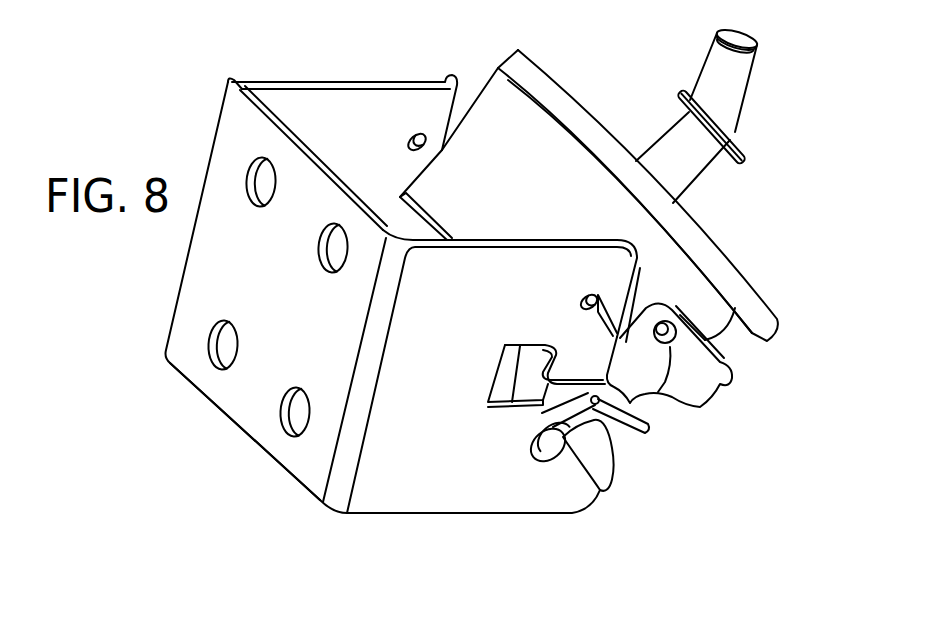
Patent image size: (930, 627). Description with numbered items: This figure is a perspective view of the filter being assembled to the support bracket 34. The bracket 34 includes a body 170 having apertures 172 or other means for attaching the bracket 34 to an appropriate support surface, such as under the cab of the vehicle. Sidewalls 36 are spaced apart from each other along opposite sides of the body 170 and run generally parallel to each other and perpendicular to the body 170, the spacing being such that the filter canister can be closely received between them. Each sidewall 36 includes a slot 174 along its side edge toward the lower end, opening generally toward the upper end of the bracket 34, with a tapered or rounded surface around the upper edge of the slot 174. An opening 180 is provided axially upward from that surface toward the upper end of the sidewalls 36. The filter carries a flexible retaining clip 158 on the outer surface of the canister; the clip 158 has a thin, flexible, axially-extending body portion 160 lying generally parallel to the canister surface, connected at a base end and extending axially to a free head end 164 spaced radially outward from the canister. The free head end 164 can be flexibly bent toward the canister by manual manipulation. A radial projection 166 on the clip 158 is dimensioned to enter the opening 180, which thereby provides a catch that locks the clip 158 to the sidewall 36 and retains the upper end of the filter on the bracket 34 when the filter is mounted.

The support bracket 34 is at (215, 134).
The sidewalls 36 is at (536, 503).
The flexible retaining clip 158 is at (712, 395).
The body portion 160 is at (719, 377).
The free head end 164 is at (705, 340).
The radial projection 166 is at (645, 433).
The body 170 is at (242, 408).
The apertures 172 is at (297, 433).
The slot 174 is at (587, 483).
The opening 180 is at (597, 293).